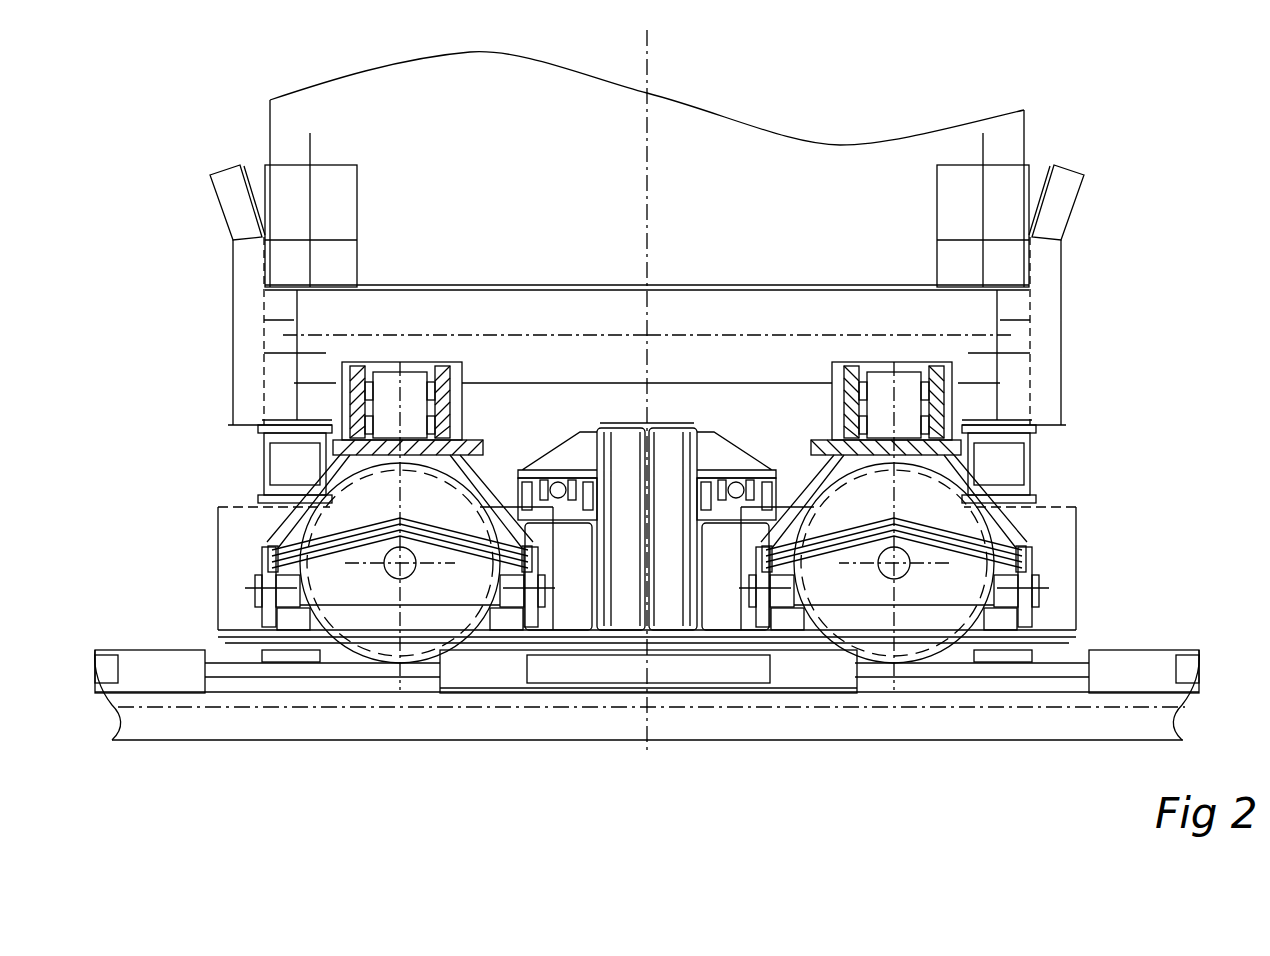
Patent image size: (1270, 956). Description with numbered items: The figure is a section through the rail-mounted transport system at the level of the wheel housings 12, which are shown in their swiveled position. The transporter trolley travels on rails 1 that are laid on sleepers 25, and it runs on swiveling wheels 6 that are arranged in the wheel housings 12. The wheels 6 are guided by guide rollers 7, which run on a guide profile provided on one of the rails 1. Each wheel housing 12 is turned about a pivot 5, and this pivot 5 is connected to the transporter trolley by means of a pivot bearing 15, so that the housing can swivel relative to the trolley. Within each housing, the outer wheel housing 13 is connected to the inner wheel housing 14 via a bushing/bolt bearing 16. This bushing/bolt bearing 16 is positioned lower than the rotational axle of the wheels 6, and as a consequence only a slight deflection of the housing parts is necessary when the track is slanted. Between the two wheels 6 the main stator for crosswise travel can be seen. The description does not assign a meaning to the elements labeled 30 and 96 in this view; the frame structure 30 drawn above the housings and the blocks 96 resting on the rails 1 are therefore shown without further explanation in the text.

The rails 1 is at (320, 690).
The sleepers 25 is at (233, 720).
The guide blocks 96 is at (165, 676).
The carriage frame 30 is at (810, 165).
The pivot 5 is at (408, 382).
The pivot bearing 15 is at (448, 368).
The outer wheel housing 13 is at (330, 523).
The inner wheel housing 14 is at (333, 572).
The bushing/bolt bearing 16 is at (260, 598).
The wheel housing 12 is at (508, 458).
The swiveling wheels 6 is at (915, 642).
The guide rollers 7 is at (1022, 658).